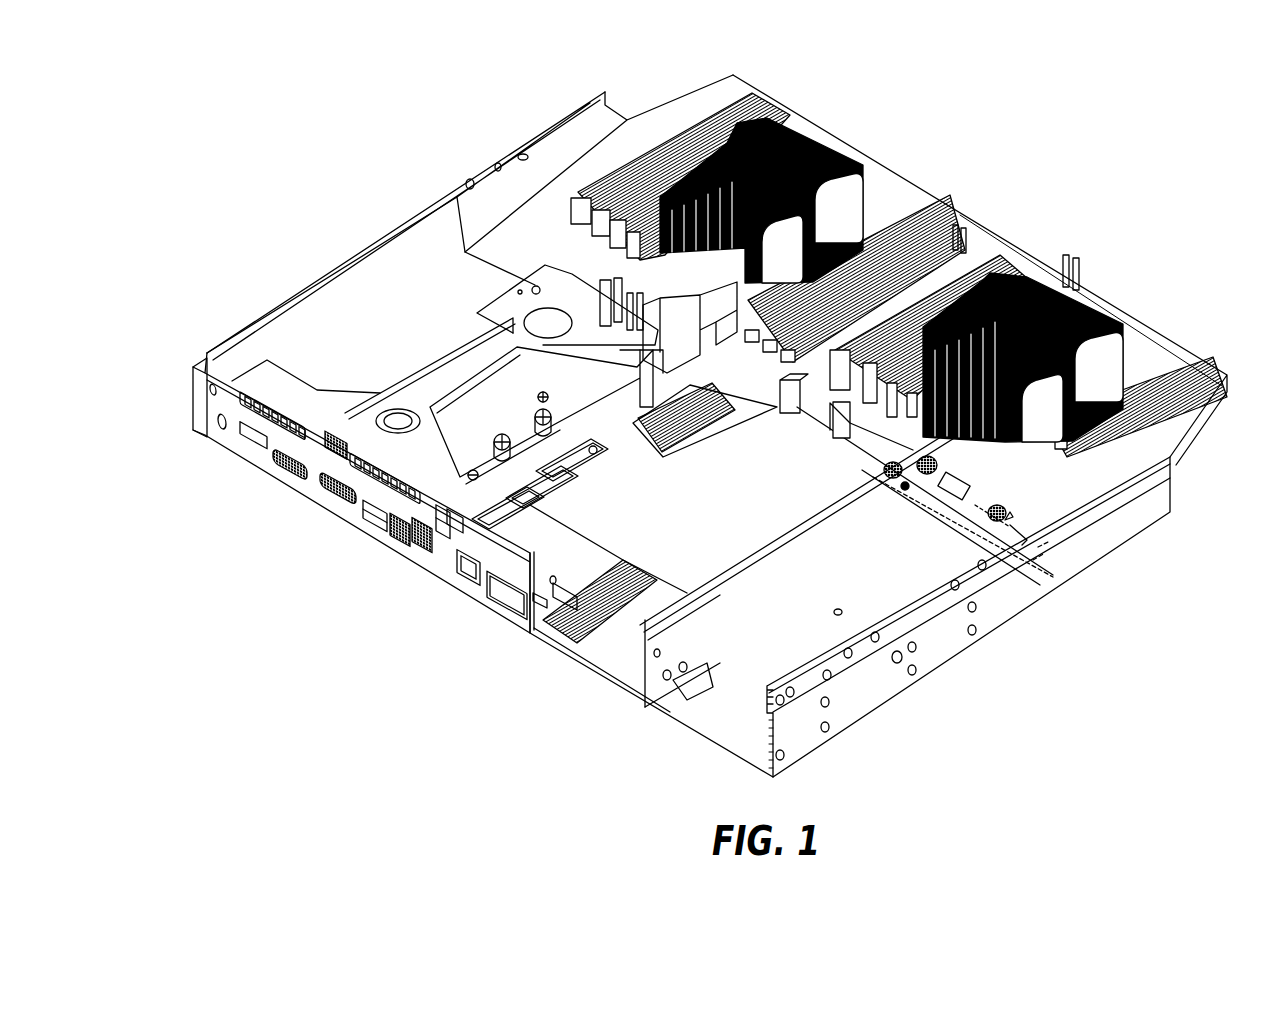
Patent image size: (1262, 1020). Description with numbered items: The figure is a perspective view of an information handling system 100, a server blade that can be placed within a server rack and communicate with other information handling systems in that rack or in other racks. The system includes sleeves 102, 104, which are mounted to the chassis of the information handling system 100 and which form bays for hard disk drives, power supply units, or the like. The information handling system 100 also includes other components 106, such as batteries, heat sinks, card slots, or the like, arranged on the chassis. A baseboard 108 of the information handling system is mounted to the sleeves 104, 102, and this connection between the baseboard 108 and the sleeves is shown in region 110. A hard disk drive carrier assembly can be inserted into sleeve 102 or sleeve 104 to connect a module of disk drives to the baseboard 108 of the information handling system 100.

The information handling system 100 is at (948, 84).
The sleeve 102 is at (898, 576).
The sleeve 104 is at (553, 587).
The other components 106 is at (737, 120).
The baseboard 108 is at (1035, 520).
The region 110 is at (990, 520).